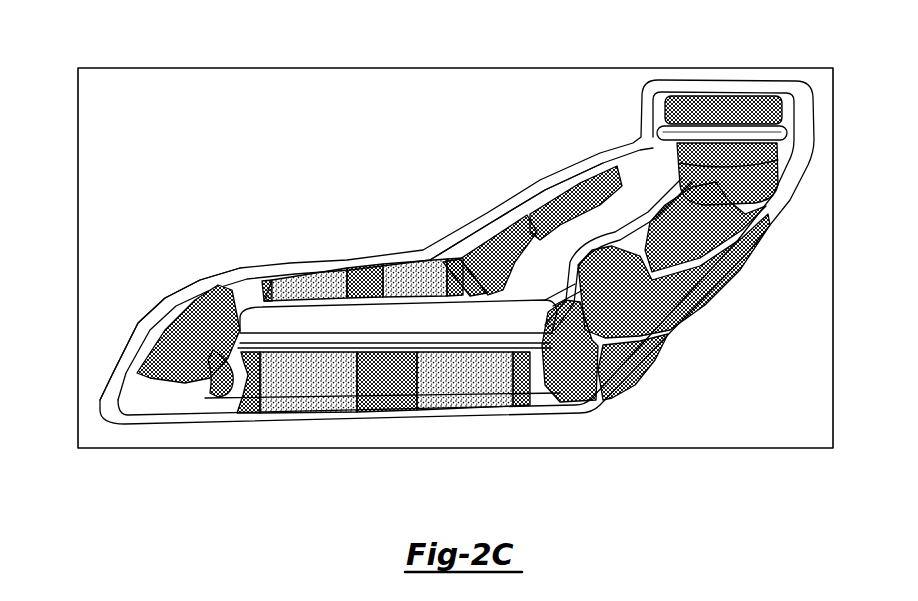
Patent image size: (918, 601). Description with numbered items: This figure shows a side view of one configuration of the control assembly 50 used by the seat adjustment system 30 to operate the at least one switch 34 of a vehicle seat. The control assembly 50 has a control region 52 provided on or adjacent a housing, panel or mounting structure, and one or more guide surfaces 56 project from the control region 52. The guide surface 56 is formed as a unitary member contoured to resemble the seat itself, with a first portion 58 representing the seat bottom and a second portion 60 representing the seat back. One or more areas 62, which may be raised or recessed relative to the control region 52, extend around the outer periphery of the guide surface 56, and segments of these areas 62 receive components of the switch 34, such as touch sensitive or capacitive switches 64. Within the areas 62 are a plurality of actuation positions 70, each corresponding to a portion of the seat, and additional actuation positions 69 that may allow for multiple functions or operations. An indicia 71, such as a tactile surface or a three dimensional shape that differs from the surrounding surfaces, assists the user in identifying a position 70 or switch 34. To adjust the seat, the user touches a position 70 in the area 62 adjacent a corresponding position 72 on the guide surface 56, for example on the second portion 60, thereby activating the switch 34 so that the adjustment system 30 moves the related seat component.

The seat adjustment system 30 is at (105, 472).
The switch 34 is at (815, 323).
The control assembly 50 is at (838, 70).
The control region 52 is at (118, 122).
The guide surface 56 is at (330, 316).
The first portion of the guide surface 58 is at (390, 323).
The second portion of the guide surface 60 is at (547, 245).
The area 62 is at (203, 285).
The touch sensitive or capacitive switch 64 is at (160, 403).
The actuation positions 69 is at (300, 275).
The actuation position 70 is at (180, 327).
The indicia 71 is at (650, 134).
The position on the guide surface 72 is at (612, 232).